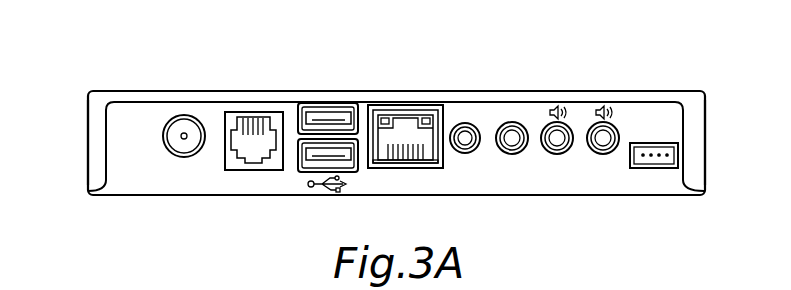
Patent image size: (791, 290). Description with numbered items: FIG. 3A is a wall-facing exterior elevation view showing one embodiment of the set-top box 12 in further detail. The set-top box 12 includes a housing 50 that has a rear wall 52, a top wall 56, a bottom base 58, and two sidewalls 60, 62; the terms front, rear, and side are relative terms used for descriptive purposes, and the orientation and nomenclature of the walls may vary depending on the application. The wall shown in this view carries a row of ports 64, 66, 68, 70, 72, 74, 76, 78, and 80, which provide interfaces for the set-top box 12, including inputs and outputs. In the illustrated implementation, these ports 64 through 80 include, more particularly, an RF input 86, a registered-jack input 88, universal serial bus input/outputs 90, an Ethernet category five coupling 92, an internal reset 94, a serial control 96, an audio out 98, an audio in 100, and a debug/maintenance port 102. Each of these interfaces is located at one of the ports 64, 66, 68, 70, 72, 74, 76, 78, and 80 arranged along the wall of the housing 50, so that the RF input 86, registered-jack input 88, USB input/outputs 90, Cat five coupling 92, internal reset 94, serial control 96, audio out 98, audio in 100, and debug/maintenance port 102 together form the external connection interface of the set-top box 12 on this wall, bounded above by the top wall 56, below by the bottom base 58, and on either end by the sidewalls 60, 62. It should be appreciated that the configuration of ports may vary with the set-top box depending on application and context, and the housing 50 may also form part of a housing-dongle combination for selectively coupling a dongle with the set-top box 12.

The set-top box 12 is at (92, 80).
The housing 50 is at (685, 88).
The rear wall 52 is at (127, 190).
The top wall 56 is at (155, 90).
The bottom base 58 is at (271, 196).
The sidewall 60 is at (706, 133).
The sidewall 62 is at (87, 135).
The port 64 is at (186, 115).
The port 66 is at (256, 115).
The port 68 is at (330, 103).
The port 70 is at (405, 106).
The port 72 is at (465, 122).
The port 74 is at (514, 121).
The port 76 is at (559, 121).
The port 78 is at (606, 121).
The port 80 is at (656, 169).
The RF input 86 is at (186, 158).
The RJ-45 input 88 is at (232, 171).
The universal serial bus (USB) input/outputs 90 is at (319, 186).
The Ethernet category 5 (Cat 5) coupling 92 is at (404, 170).
The internal reset 94 is at (467, 158).
The RS232 control 96 is at (511, 158).
The audio out 98 is at (560, 158).
The audio in 100 is at (606, 158).
The debug/maintenance port 102 is at (680, 158).